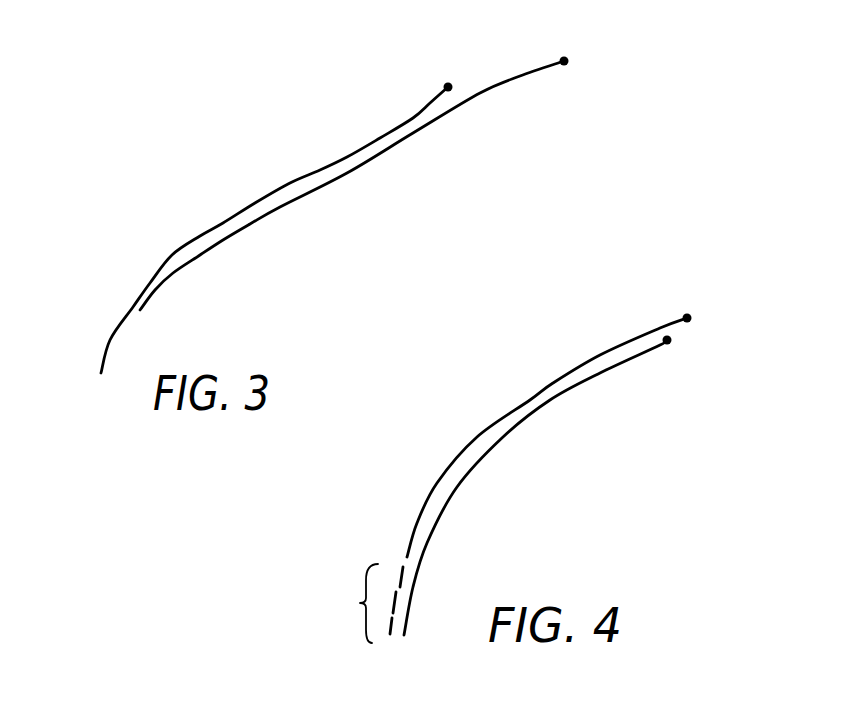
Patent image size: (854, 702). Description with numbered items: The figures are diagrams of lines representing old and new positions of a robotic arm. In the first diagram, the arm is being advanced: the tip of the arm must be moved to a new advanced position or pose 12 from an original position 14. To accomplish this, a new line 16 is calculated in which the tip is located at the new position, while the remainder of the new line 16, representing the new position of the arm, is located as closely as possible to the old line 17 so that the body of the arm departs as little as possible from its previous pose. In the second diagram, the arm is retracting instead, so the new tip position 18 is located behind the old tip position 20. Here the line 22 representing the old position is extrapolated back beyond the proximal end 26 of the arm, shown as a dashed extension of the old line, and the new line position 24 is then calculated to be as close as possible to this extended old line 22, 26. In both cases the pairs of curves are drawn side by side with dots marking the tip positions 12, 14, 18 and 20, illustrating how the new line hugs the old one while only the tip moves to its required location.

In FIG. 3, the new advanced position 12 is at (571, 56).
In FIG. 3, the original position 14 is at (444, 81).
In FIG. 3, the new line 16 is at (273, 210).
In FIG. 3, the old line 17 is at (172, 255).
In FIG. 4, the new tip position 18 is at (670, 347).
In FIG. 4, the old tip position 20 is at (689, 313).
In FIG. 4, the line representing the old position 22 is at (450, 470).
In FIG. 4, the new line position 24 is at (500, 443).
In FIG. 4, the proximal end 26 is at (360, 602).